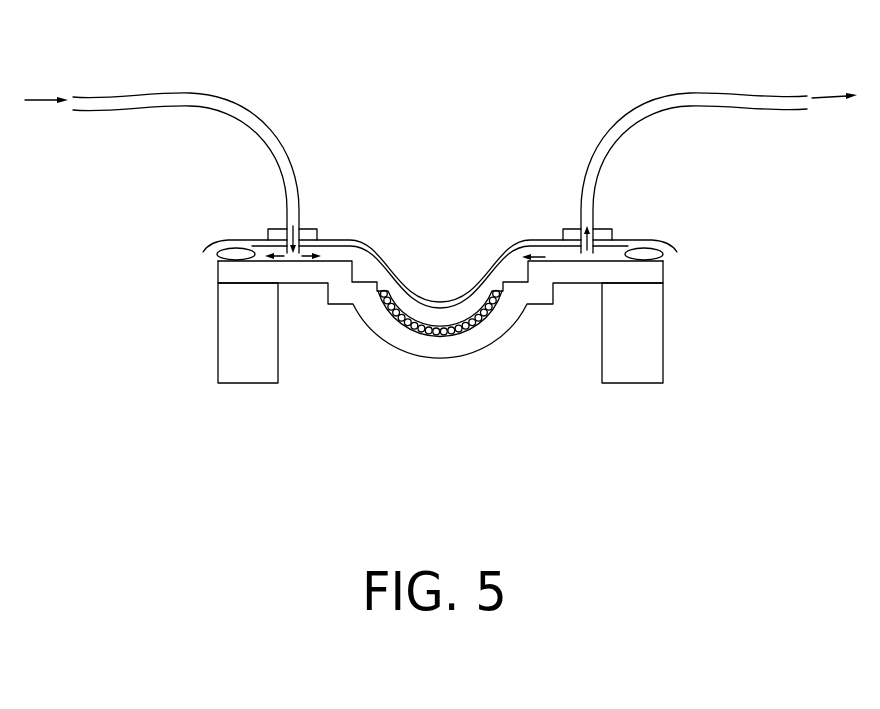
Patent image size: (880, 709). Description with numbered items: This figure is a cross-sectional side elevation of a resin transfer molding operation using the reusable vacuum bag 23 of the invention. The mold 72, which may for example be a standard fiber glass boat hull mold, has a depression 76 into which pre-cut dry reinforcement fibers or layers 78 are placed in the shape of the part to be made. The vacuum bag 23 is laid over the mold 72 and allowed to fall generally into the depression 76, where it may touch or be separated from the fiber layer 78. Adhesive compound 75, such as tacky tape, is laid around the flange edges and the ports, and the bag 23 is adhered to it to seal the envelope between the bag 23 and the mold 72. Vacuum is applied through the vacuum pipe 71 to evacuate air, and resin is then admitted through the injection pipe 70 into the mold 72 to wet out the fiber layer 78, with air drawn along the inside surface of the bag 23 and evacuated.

The vacuum bag 23 is at (498, 270).
The injection pipe 70 is at (150, 97).
The vacuum pipe 71 is at (713, 100).
The mold 72 is at (648, 272).
The adhesive compound 75 is at (236, 256).
The depression 76 is at (365, 268).
The reinforcement fibers or layers 78 is at (405, 322).